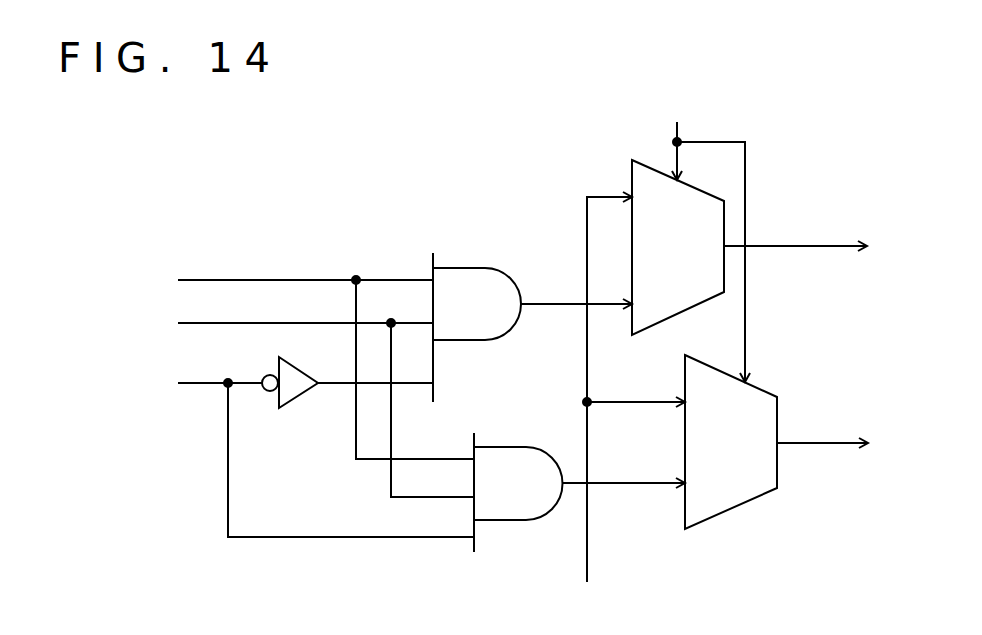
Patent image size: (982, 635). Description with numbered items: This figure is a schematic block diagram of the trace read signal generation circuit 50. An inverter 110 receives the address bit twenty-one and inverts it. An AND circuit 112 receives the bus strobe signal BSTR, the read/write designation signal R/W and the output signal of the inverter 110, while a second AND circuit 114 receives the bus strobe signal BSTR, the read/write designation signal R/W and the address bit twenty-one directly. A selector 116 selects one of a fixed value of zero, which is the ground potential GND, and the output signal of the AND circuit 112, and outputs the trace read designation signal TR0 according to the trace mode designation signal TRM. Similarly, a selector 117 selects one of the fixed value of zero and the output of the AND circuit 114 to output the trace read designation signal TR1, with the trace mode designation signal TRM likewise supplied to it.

The trace read signal generation circuit 50 is at (845, 585).
The inverter 110 is at (298, 393).
The AND circuit 112 is at (477, 327).
The AND circuit 114 is at (518, 492).
The selector 116 is at (655, 325).
The selector 117 is at (737, 507).